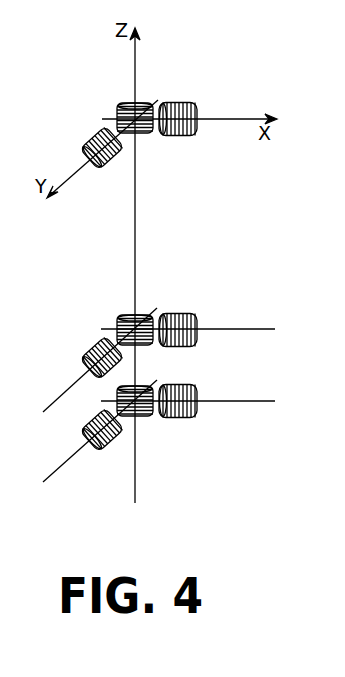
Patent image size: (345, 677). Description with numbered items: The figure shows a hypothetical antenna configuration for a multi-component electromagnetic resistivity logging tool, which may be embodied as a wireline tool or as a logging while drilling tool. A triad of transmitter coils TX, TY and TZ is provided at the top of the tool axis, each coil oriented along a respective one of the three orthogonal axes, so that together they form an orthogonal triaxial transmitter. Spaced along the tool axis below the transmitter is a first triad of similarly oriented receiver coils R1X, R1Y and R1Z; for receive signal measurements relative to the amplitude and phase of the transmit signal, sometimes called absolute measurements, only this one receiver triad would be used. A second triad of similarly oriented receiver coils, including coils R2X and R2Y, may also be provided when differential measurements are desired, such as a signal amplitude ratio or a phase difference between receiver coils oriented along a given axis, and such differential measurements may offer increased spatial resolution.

The transmitter coil TZ is at (125, 107).
The transmitter coil TX is at (183, 109).
The transmitter coil TY is at (101, 161).
The receiver coil R1Z is at (125, 317).
The receiver coil R1X is at (187, 319).
The receiver coil R1Y is at (87, 358).
The receiver coil R2X is at (193, 397).
The receiver coil R2Y is at (101, 443).